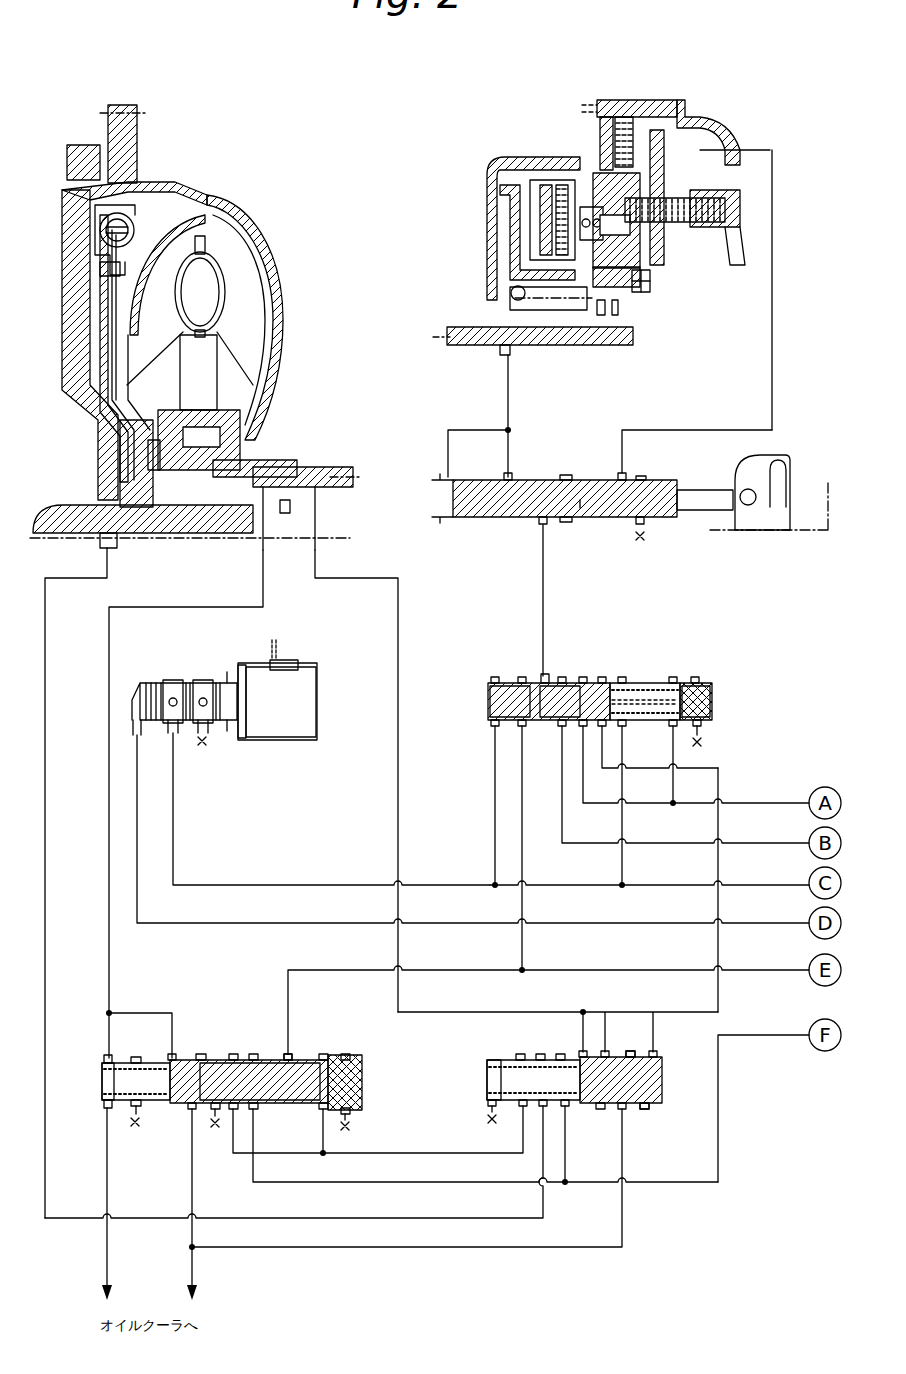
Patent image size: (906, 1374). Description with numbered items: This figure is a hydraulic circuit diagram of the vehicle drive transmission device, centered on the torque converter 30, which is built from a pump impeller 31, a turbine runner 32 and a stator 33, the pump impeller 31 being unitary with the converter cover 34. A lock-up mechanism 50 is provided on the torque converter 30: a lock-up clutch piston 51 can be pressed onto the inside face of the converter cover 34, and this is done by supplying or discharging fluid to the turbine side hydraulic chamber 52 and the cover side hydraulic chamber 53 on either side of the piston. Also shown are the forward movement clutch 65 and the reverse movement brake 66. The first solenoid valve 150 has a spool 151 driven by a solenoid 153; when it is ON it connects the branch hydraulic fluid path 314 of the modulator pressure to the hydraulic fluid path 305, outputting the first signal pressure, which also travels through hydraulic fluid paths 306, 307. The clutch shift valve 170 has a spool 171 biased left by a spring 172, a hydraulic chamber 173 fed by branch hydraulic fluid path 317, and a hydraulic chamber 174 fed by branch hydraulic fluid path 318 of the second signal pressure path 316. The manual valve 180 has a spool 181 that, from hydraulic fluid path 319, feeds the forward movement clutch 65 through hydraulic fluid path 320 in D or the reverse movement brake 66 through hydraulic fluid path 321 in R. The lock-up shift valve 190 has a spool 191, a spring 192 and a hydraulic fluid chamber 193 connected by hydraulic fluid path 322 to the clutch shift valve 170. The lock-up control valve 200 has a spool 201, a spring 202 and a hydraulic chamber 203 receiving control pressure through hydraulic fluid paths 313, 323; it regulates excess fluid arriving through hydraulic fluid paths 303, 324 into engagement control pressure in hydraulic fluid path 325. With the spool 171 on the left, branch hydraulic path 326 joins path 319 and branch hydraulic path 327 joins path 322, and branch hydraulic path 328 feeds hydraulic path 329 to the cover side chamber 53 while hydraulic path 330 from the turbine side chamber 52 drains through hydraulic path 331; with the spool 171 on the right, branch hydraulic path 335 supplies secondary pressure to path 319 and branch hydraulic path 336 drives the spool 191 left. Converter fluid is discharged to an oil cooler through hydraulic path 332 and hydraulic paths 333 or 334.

The torque converter 30 is at (276, 207).
The pump impeller 31 is at (266, 310).
The turbine runner 32 is at (170, 310).
The stator 33 is at (216, 374).
The converter cover 34 is at (70, 262).
The lock-up mechanism 50 is at (90, 428).
The lock-up clutch piston 51 is at (95, 305).
The turbine side hydraulic chamber 52 is at (150, 210).
The cover side hydraulic chamber 53 is at (85, 350).
The forward movement clutch 65 is at (488, 175).
The reverse movement brake 66 is at (720, 140).
The first solenoid valve 150 is at (330, 685).
The spool 151 is at (173, 690).
The solenoid 153 is at (318, 717).
The clutch shift valve 170 is at (722, 700).
The spool 171 is at (585, 690).
The spring 172 is at (640, 690).
The hydraulic chamber 173 is at (495, 680).
The hydraulic chamber 174 is at (675, 683).
The manual valve 180 is at (447, 507).
The spool 181 is at (580, 500).
The lock-up shift valve 190 is at (692, 1052).
The spool 191 is at (632, 1049).
The spring 192 is at (487, 1078).
The hydraulic fluid chamber 193 is at (655, 1109).
The lock-up control valve 200 is at (370, 1075).
The spool 201 is at (277, 1092).
The spring 202 is at (108, 1082).
The hydraulic chamber 203 is at (287, 1050).
The hydraulic fluid path 303 is at (720, 1125).
The hydraulic fluid path 305 is at (300, 885).
The hydraulic fluid path 306 is at (608, 886).
The hydraulic fluid path 307 is at (693, 886).
The hydraulic fluid path 313 is at (605, 968).
The branch hydraulic fluid path 314 is at (205, 925).
The hydraulic fluid path 316 is at (724, 795).
The branch hydraulic fluid path 317 is at (495, 775).
The branch hydraulic fluid path 318 is at (678, 752).
The hydraulic fluid path 319 is at (545, 590).
The hydraulic fluid path 320 is at (512, 408).
The hydraulic fluid path 321 is at (690, 428).
The hydraulic fluid path 322 is at (720, 990).
The hydraulic fluid path 323 is at (335, 970).
The hydraulic fluid path 324 is at (340, 1182).
The hydraulic fluid path 325 is at (470, 1153).
The branch hydraulic path 326 is at (523, 840).
The branch hydraulic path 327 is at (642, 806).
The branch hydraulic path 328 is at (566, 1170).
The hydraulic path 329 is at (380, 1218).
The hydraulic path 330 is at (483, 1012).
The hydraulic path 331 is at (438, 1247).
The hydraulic path 332 is at (108, 945).
The hydraulic path 333 is at (192, 1155).
The hydraulic path 334 is at (107, 1150).
The branch hydraulic path 335 is at (773, 840).
The branch hydraulic path 336 is at (622, 866).